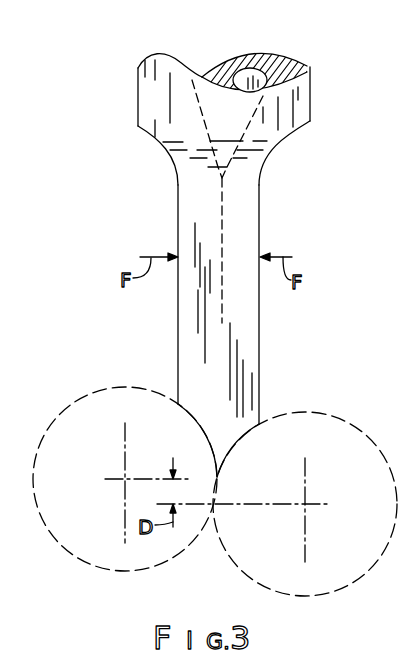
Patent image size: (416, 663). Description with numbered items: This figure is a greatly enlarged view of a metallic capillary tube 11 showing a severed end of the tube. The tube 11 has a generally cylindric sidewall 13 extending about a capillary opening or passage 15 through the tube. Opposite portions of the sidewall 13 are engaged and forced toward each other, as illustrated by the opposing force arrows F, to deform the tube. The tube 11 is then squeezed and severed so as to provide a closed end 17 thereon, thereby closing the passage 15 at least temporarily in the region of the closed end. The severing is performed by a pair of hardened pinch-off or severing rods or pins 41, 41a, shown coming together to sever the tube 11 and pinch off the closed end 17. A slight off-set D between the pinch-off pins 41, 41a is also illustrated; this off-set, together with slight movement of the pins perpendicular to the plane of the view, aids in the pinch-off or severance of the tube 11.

The metallic capillary tube 11 is at (148, 94).
The cylindric sidewall 13 is at (137, 123).
The capillary opening or passage 15 is at (246, 64).
The closed end 17 is at (225, 438).
The pinch-off pin 41 is at (92, 567).
The pinch-off pin 41a is at (312, 597).